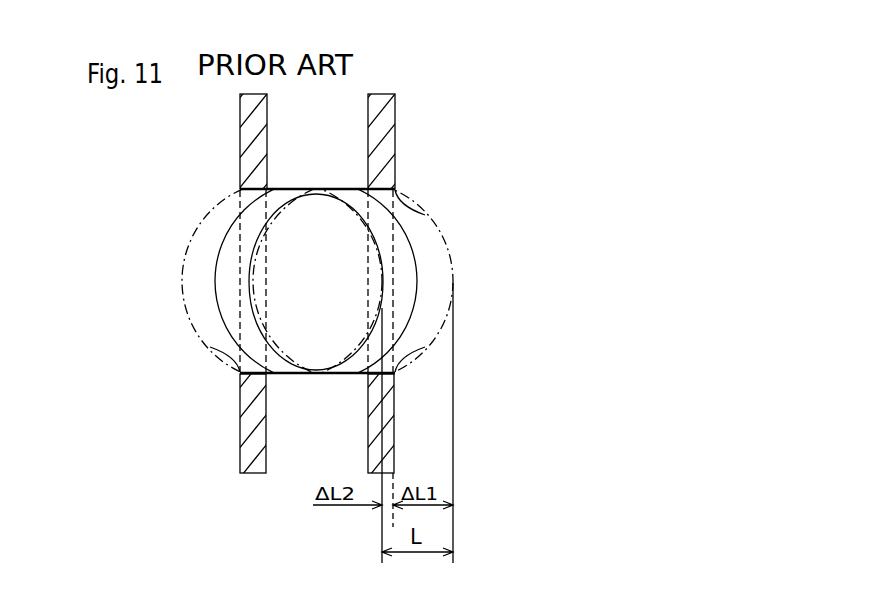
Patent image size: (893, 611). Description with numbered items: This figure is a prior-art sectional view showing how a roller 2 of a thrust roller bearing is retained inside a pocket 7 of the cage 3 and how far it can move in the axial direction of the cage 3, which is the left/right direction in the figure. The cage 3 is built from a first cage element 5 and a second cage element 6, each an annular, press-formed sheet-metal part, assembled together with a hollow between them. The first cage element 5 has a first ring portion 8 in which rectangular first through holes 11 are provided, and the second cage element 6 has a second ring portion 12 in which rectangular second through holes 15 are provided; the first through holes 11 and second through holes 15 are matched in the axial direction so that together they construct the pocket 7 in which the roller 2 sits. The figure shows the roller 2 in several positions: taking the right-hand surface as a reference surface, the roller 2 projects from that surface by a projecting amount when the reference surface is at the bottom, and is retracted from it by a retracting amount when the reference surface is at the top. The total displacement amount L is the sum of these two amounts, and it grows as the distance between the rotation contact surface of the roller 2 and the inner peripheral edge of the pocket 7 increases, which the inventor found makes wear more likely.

The roller 2 is at (382, 317).
The cage 3 is at (336, 117).
The first cage element 5 is at (383, 153).
The second cage element 6 is at (240, 121).
The pocket 7 is at (418, 215).
The first ring portion 8 is at (393, 397).
The first through hole 11 is at (388, 372).
The second ring portion 12 is at (253, 408).
The second through hole 15 is at (248, 371).